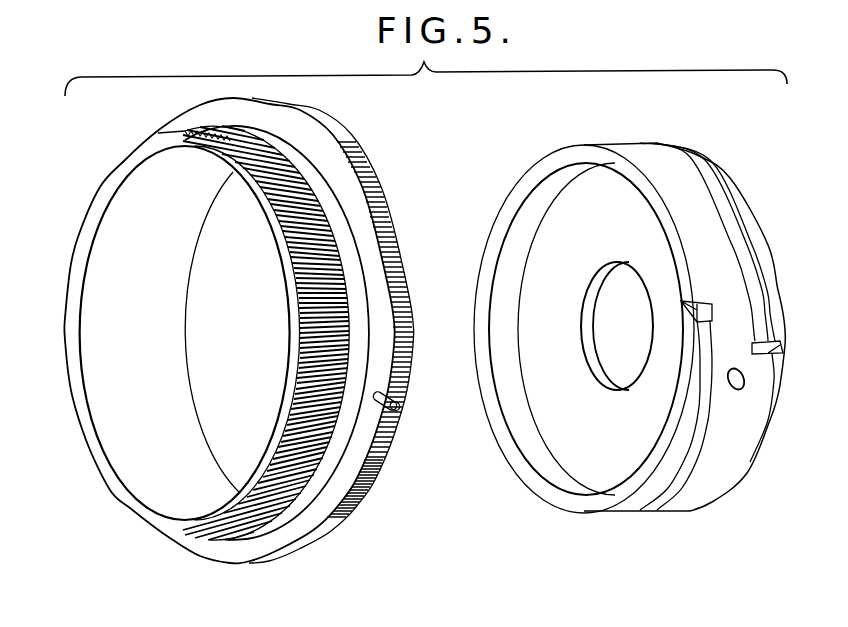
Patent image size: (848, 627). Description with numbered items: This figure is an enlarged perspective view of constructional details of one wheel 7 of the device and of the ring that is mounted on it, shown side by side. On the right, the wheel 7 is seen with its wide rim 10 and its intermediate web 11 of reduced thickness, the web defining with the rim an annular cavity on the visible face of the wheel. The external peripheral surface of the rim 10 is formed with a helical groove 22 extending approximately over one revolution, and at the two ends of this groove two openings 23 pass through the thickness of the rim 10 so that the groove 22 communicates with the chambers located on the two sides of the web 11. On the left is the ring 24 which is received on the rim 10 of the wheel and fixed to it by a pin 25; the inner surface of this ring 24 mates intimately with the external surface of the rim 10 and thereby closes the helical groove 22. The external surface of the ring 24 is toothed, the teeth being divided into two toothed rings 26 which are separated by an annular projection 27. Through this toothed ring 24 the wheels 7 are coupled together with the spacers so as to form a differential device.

The wheel 7 is at (719, 498).
The rim 10 is at (736, 436).
The web 11 is at (576, 438).
The helical groove 22 is at (723, 205).
The openings 23 is at (700, 300).
The ring 24 is at (73, 416).
The pin 25 is at (400, 414).
The toothed rings 26 is at (393, 313).
The annular projection 27 is at (330, 165).